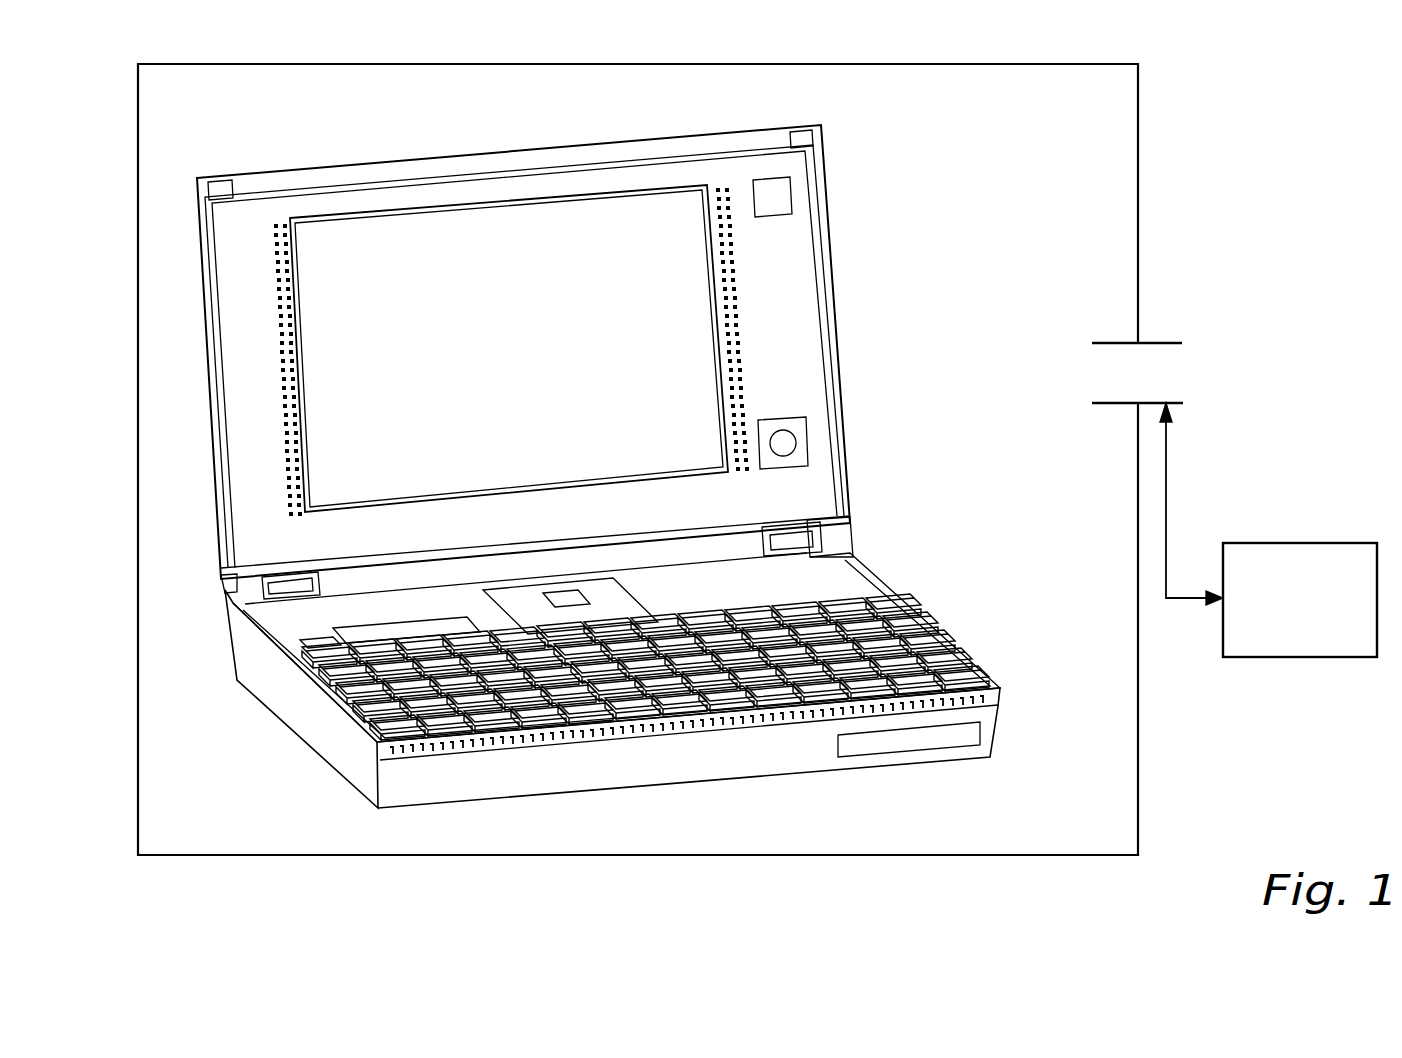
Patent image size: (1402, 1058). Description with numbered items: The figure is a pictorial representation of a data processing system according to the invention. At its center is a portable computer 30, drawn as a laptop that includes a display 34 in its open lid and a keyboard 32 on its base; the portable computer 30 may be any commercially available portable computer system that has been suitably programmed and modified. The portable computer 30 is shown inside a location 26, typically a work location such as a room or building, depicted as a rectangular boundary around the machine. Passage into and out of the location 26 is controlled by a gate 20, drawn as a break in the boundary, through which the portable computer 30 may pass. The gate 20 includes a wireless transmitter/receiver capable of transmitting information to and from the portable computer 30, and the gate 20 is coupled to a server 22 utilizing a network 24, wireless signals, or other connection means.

The gate 20 is at (1192, 368).
The server 22 is at (1305, 543).
The network 24 is at (1166, 492).
The location 26 is at (1138, 760).
The portable computer 30 is at (928, 199).
The keyboard 32 is at (923, 630).
The display 34 is at (517, 338).